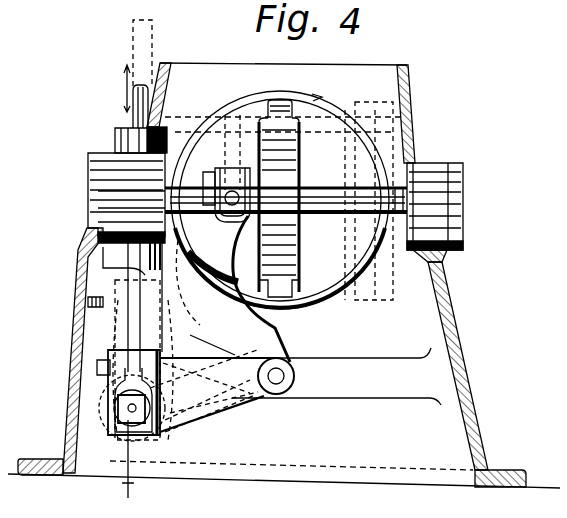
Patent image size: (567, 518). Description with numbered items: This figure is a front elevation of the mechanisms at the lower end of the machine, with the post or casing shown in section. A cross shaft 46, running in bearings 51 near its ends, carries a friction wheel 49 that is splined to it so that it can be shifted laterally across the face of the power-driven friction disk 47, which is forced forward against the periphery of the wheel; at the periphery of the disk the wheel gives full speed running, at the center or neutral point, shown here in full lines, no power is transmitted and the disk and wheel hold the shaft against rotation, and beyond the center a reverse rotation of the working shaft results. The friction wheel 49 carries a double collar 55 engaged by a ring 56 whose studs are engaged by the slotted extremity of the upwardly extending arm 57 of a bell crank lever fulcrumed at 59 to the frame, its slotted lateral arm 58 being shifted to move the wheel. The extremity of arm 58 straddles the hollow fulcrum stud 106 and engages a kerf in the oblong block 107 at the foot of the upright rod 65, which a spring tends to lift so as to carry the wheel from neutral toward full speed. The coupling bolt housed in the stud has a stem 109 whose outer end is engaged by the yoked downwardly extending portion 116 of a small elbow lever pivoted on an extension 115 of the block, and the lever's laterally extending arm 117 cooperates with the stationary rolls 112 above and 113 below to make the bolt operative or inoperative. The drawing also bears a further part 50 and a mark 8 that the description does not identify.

The upright rod 65 is at (137, 103).
The bearings 51 is at (105, 163).
The friction wheel 49 is at (360, 102).
The double collar 55 is at (208, 172).
The ring 56 is at (238, 183).
The shaft 50 is at (348, 185).
The cross shaft 46 is at (347, 200).
The friction disk 47 is at (318, 294).
The upwardly extending arm of bell crank lever 57 is at (272, 330).
The slotted lateral arm of bell crank lever 58 is at (208, 400).
The fulcrum 59 is at (284, 382).
The oblong block 107 is at (223, 357).
The stem 109 is at (168, 420).
The stud or roll 112 is at (90, 300).
The laterally extending arm of elbow lever 117 is at (98, 362).
The rod 8 is at (112, 357).
The stud or roll 113 is at (117, 382).
The extension of the block 115 is at (125, 393).
The yoked downwardly extending portion 116 is at (120, 412).
The fulcrum stud 106 is at (130, 423).